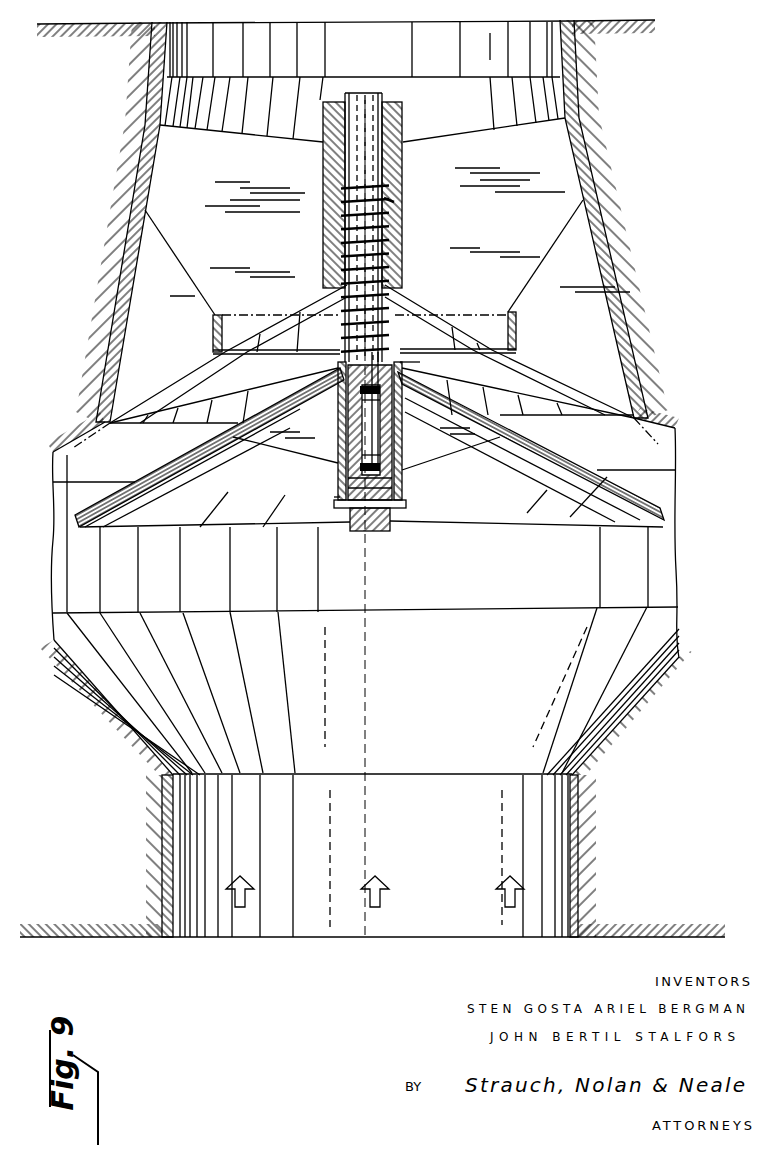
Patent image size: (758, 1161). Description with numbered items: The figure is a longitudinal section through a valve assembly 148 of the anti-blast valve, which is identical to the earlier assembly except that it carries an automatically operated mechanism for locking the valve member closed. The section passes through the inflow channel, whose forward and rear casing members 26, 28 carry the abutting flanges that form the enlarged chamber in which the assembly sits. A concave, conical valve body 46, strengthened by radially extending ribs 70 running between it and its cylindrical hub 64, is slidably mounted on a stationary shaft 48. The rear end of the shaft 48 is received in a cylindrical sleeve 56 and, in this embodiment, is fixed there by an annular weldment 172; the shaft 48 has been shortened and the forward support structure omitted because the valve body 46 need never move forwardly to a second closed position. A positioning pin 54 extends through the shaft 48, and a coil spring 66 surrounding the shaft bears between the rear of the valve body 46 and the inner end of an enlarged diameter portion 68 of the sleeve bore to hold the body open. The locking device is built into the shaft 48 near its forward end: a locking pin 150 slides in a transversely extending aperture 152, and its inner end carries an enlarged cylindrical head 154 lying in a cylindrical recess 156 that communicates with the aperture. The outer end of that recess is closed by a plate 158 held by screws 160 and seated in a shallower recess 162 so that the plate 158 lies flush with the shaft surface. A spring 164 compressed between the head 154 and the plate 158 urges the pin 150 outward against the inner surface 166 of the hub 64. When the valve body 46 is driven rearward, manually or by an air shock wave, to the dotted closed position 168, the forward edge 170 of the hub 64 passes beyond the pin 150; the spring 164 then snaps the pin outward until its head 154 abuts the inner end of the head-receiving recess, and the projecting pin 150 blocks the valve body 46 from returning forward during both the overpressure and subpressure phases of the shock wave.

The inflow channel casing member 26 is at (168, 840).
The inflow channel casing member 28 is at (102, 372).
The valve body 46 is at (203, 446).
The shaft 48 is at (372, 532).
The positioning pin 54 is at (406, 508).
The cylindrical sleeve 56 is at (405, 252).
The cylindrical hub 64 is at (366, 444).
The coil spring 66 is at (340, 243).
The enlarged diameter portion 68 is at (394, 201).
The radially extending ribs 70 is at (253, 440).
The valve assembly 148 is at (245, 516).
The locking pin 150 is at (362, 438).
The transversely extending aperture 152 is at (340, 455).
The cylindrical head 154 is at (400, 403).
The cylindrical recess 156 is at (400, 375).
The plate 158 is at (410, 477).
The screws 160 is at (360, 390).
The recess 162 is at (403, 490).
The spring 164 is at (403, 395).
The inner surface 166 is at (346, 432).
The closed position 168 is at (477, 343).
The forward edge 170 is at (335, 497).
The annular weldment 172 is at (383, 93).